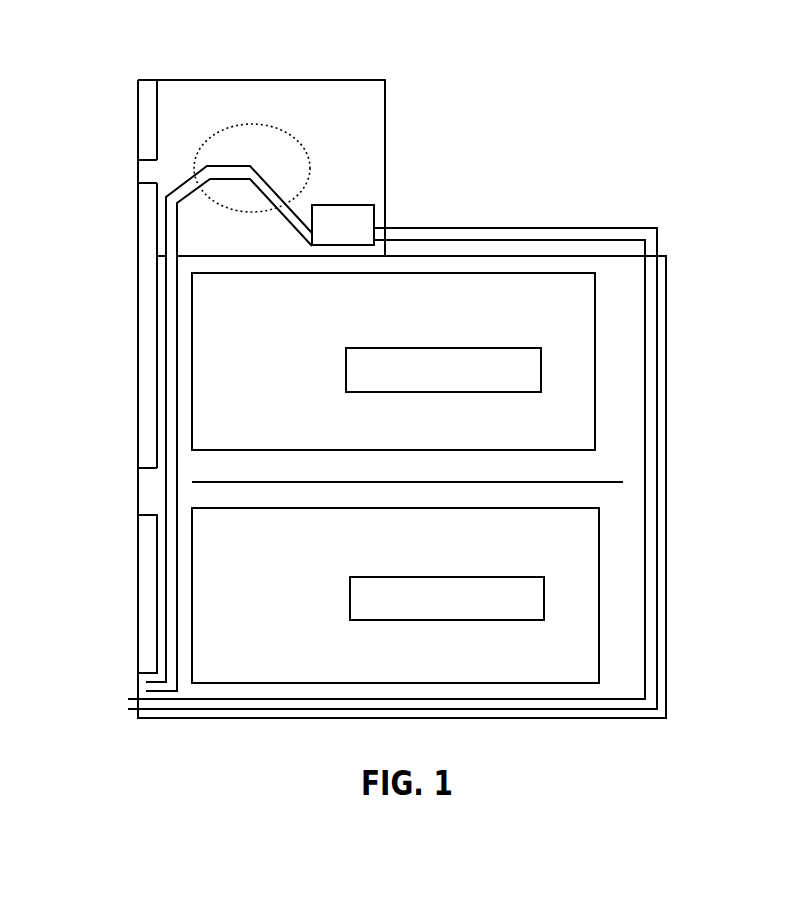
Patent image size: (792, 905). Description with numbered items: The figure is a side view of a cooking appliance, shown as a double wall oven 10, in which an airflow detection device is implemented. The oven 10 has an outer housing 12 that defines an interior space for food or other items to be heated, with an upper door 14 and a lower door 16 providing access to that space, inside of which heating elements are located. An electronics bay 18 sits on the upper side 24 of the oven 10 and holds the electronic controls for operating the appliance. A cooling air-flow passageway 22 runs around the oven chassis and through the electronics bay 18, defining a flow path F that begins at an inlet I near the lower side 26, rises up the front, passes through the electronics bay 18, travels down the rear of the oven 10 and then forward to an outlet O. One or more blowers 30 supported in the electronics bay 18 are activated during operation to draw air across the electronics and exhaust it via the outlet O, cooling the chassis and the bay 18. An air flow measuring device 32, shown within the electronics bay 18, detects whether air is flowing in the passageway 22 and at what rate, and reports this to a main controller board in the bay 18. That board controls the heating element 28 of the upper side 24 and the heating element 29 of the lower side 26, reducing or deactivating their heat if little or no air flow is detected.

The double wall oven 10 is at (521, 79).
The outer housing 12 is at (622, 316).
The upper door 14 is at (139, 272).
The lower door 16 is at (140, 593).
The electronics bay 18 is at (273, 70).
The cooling air-flow passageway 22 is at (163, 481).
The upper side 24 is at (583, 424).
The lower side 26 is at (587, 642).
The heating element 28 is at (350, 380).
The heating element 29 is at (352, 606).
The blower 30 is at (303, 172).
The air flow measuring device 32 is at (372, 216).
The inlet I is at (133, 686).
The outlet O is at (128, 703).
The flow path F is at (150, 706).